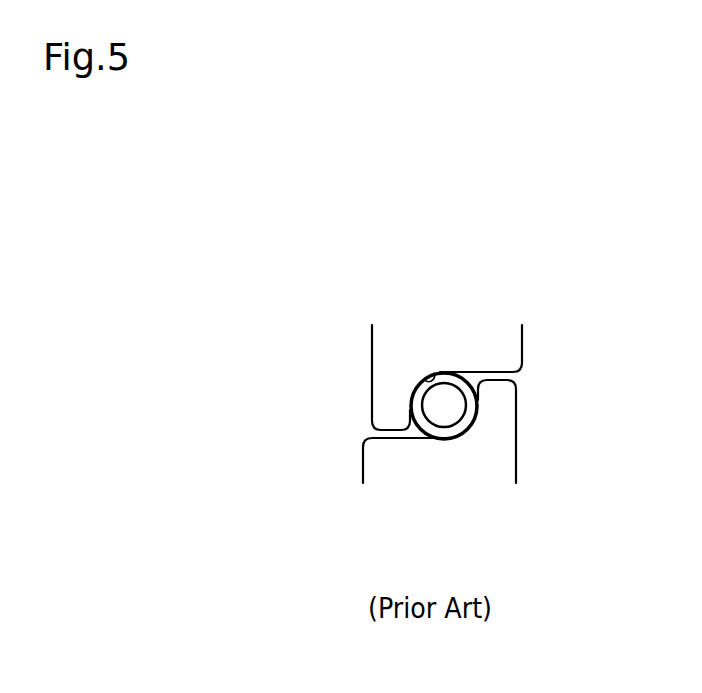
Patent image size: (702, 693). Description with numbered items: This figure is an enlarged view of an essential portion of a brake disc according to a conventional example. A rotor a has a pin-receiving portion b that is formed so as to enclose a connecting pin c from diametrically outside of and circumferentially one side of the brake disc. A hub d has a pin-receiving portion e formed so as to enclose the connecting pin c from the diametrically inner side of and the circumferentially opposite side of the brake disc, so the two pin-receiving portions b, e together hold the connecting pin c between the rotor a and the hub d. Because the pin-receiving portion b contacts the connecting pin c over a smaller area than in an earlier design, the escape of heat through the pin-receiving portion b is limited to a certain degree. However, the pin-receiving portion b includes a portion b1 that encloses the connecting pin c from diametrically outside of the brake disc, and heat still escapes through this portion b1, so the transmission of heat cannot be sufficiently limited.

The rotor a is at (459, 333).
The pin-receiving portion of the rotor b is at (390, 400).
The portion enclosing the connecting pin from diametrically outside b1 is at (434, 373).
The connecting pin c is at (412, 414).
The hub d is at (423, 465).
The pin-receiving portion of the hub e is at (502, 403).